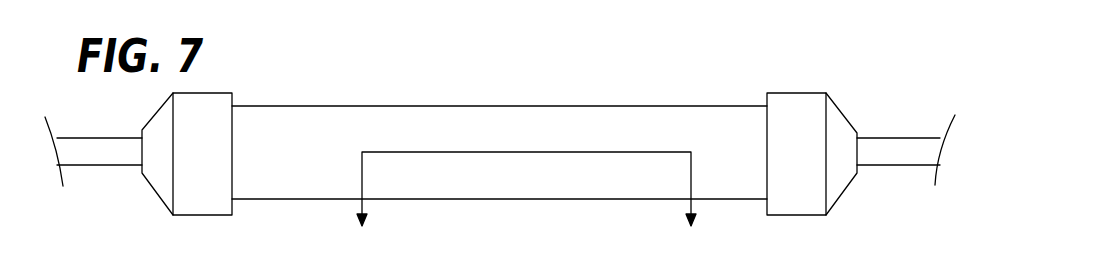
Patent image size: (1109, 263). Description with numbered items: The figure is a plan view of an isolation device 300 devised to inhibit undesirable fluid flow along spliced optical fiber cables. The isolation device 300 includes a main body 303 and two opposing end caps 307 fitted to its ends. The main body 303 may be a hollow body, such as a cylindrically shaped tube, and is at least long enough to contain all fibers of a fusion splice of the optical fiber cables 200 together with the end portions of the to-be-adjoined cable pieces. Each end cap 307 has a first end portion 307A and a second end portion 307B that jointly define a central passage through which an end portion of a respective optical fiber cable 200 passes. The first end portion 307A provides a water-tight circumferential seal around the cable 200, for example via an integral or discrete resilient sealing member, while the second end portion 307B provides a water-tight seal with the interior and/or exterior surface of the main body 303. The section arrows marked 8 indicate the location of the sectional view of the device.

The optical fiber cables 200 is at (105, 153).
The isolation device 300 is at (557, 87).
The main body 303 is at (315, 118).
The end caps 307 is at (520, 109).
The first end portion 307A is at (840, 138).
The second end portion 307B is at (780, 105).
The section line for FIG. 8 is at (523, 206).